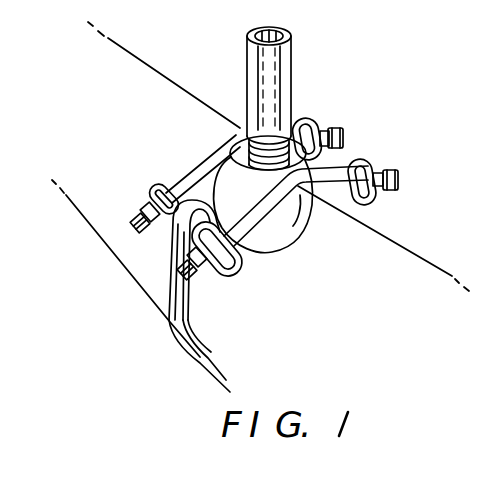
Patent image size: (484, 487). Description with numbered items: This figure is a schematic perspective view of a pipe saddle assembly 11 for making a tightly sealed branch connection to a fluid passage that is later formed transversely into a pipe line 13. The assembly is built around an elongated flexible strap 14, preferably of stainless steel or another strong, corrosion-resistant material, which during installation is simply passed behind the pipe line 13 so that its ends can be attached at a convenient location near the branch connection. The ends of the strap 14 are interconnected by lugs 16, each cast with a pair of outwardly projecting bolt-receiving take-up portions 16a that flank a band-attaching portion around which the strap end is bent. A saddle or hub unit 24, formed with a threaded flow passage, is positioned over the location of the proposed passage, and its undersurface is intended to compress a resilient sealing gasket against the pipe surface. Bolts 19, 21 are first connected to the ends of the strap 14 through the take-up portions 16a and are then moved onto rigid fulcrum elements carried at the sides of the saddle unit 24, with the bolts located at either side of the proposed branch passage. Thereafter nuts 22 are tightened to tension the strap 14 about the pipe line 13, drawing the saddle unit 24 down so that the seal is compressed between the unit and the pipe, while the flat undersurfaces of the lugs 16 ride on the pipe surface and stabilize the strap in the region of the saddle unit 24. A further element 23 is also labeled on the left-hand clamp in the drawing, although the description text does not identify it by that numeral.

The pipe saddle assembly 11 is at (164, 124).
The pipe line 13 is at (148, 62).
The elongated flexible strap 14 is at (168, 286).
The lug 16 is at (354, 208).
The bolt-receiving take-up portion 16a is at (368, 200).
The bolt 19 is at (206, 163).
The bolt 21 is at (299, 198).
The nut 22 is at (148, 206).
The U-bolt clamp 23 is at (150, 191).
The saddle unit 24 is at (323, 162).